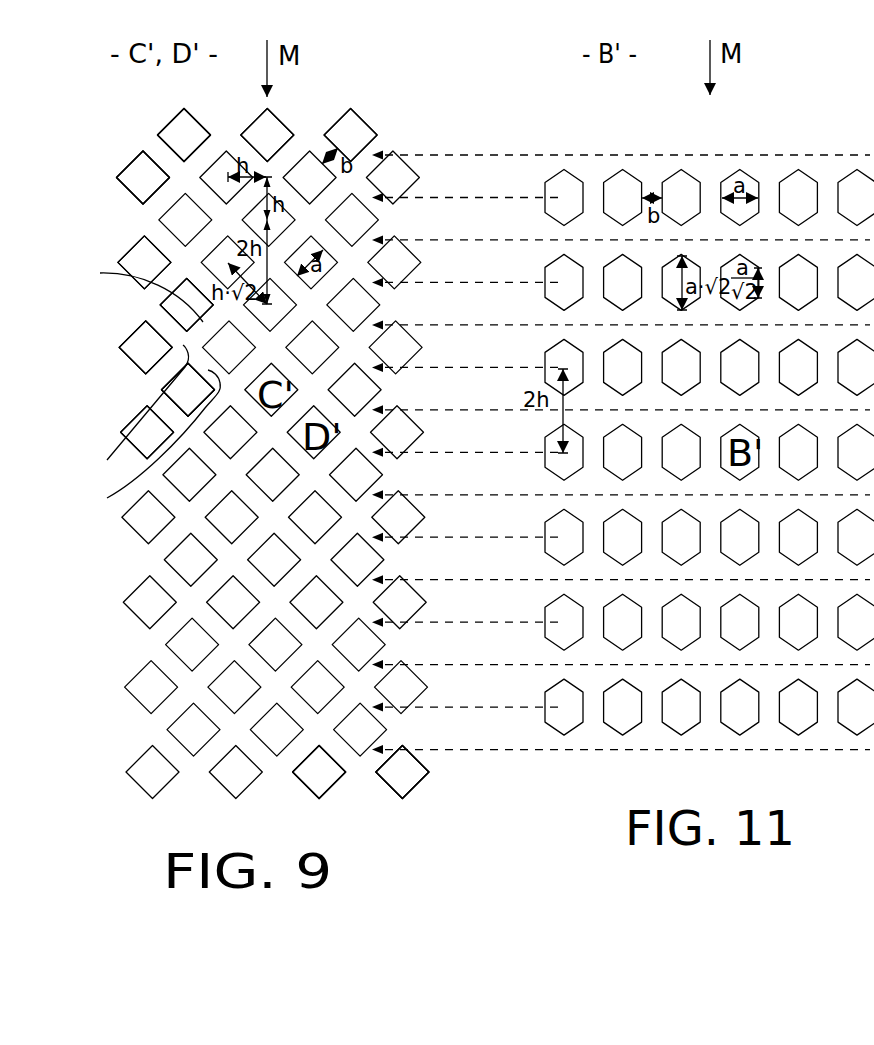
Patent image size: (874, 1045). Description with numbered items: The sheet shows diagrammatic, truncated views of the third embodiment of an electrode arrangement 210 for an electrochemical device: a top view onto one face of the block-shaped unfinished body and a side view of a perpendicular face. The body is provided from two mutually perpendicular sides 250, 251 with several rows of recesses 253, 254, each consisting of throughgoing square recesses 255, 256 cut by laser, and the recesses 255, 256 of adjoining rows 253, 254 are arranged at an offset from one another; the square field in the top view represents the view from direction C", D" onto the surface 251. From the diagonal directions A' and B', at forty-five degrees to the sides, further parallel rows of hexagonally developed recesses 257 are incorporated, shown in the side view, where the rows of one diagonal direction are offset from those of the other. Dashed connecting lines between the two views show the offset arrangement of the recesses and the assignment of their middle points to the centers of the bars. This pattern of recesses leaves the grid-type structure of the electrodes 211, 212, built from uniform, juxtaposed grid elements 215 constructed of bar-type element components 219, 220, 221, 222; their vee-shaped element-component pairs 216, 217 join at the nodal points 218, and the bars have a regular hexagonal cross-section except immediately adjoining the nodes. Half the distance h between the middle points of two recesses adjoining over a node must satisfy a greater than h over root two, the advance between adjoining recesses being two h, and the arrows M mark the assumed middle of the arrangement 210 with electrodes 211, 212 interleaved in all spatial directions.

In FIG. 9, the electrode arrangement 210 is at (428, 105).
In FIG. 9, the side 250 is at (309, 111).
In FIG. 9, the side 251 is at (117, 252).
In FIG. 9, the row of recesses 253 is at (127, 154).
In FIG. 9, the row of recesses 254 is at (161, 117).
In FIG. 9, the throughgoing recess 255 is at (127, 188).
In FIG. 9, the throughgoing recess 256 is at (195, 121).
In FIG. 11, the recess 257 is at (854, 177).
In FIG. 9, the electrode 211 is at (362, 784).
In FIG. 9, the electrode 212 is at (380, 791).
In FIG. 9, the grid element 215 is at (139, 408).
In FIG. 9, the vee-shaped element-component pair 216 is at (134, 309).
In FIG. 9, the vee-shaped element-component pair 217 is at (141, 385).
In FIG. 9, the nodal point 218 is at (128, 408).
In FIG. 9, the bar-type element component 219 is at (162, 325).
In FIG. 9, the bar-type element component 220 is at (134, 292).
In FIG. 9, the bar-type element component 221 is at (165, 372).
In FIG. 9, the bar-type element component 222 is at (143, 442).